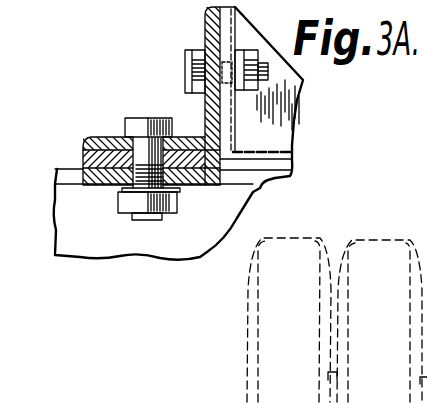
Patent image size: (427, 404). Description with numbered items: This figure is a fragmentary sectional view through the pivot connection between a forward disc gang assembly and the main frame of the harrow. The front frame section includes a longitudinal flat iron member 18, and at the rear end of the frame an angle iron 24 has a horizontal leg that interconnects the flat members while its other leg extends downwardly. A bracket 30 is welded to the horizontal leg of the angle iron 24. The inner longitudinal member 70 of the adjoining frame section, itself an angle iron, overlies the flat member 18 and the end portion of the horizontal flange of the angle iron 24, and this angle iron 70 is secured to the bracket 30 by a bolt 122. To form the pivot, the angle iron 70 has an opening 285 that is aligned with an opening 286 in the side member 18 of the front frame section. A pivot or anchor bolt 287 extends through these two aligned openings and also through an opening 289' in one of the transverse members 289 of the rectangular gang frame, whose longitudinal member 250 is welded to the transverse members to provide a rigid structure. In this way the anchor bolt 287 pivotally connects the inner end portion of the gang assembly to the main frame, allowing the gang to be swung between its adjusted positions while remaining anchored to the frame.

The longitudinal flat iron member 18 is at (105, 150).
The angle iron 24 is at (290, 162).
The bracket 30 is at (231, 110).
The inner longitudinal member 70 is at (205, 24).
The bolt 122 is at (183, 57).
The longitudinal member 250 is at (86, 250).
The opening 285 is at (180, 134).
The opening 286 is at (99, 184).
The pivot or anchor bolt 287 is at (130, 136).
The transverse member 289 is at (213, 100).
The opening 289' is at (213, 108).